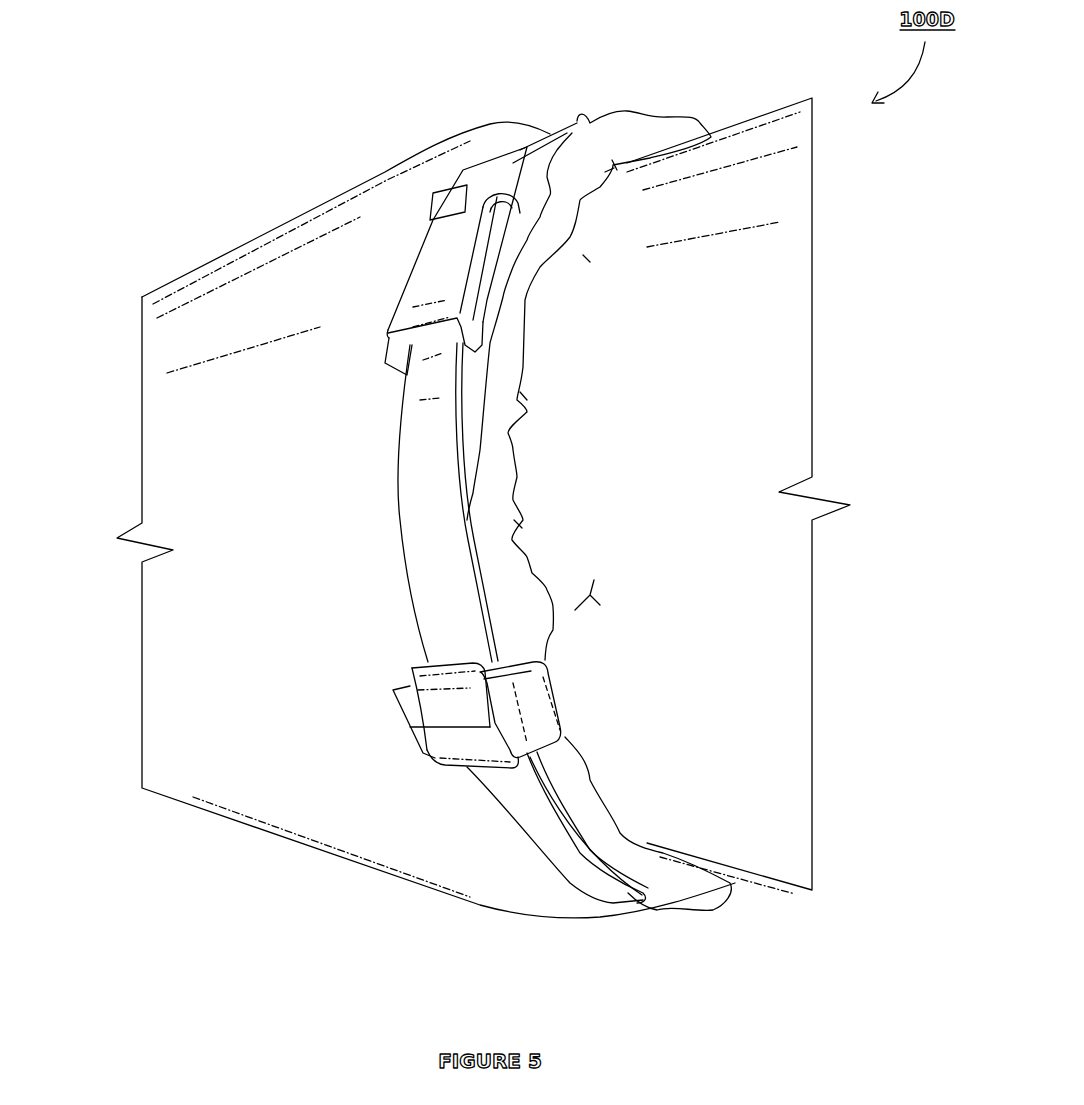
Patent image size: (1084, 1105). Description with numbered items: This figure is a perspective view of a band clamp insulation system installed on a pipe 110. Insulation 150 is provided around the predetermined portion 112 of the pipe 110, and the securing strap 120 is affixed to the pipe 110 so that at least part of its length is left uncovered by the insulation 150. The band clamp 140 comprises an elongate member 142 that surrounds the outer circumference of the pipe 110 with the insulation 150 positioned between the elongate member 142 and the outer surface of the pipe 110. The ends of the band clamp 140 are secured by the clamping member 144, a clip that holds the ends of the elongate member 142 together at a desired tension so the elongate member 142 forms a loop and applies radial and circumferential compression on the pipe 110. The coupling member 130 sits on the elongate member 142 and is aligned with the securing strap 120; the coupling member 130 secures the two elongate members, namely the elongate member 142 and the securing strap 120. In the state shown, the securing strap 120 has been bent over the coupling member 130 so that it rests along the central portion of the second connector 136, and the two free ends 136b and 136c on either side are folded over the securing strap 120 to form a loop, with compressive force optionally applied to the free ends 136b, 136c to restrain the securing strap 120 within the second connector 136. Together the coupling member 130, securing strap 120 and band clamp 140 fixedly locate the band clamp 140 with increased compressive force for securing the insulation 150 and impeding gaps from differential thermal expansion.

The pipe 110 is at (718, 370).
The predetermined portion 112 is at (183, 763).
The securing strap 120 is at (403, 717).
The coupling member 130 is at (557, 772).
The second connector 136 is at (397, 672).
The free end 136b is at (443, 698).
The free end 136c is at (453, 745).
The band clamp 140 is at (533, 820).
The elongate member 142 is at (433, 468).
The clamping member 144 is at (433, 273).
The insulation 150 is at (640, 135).